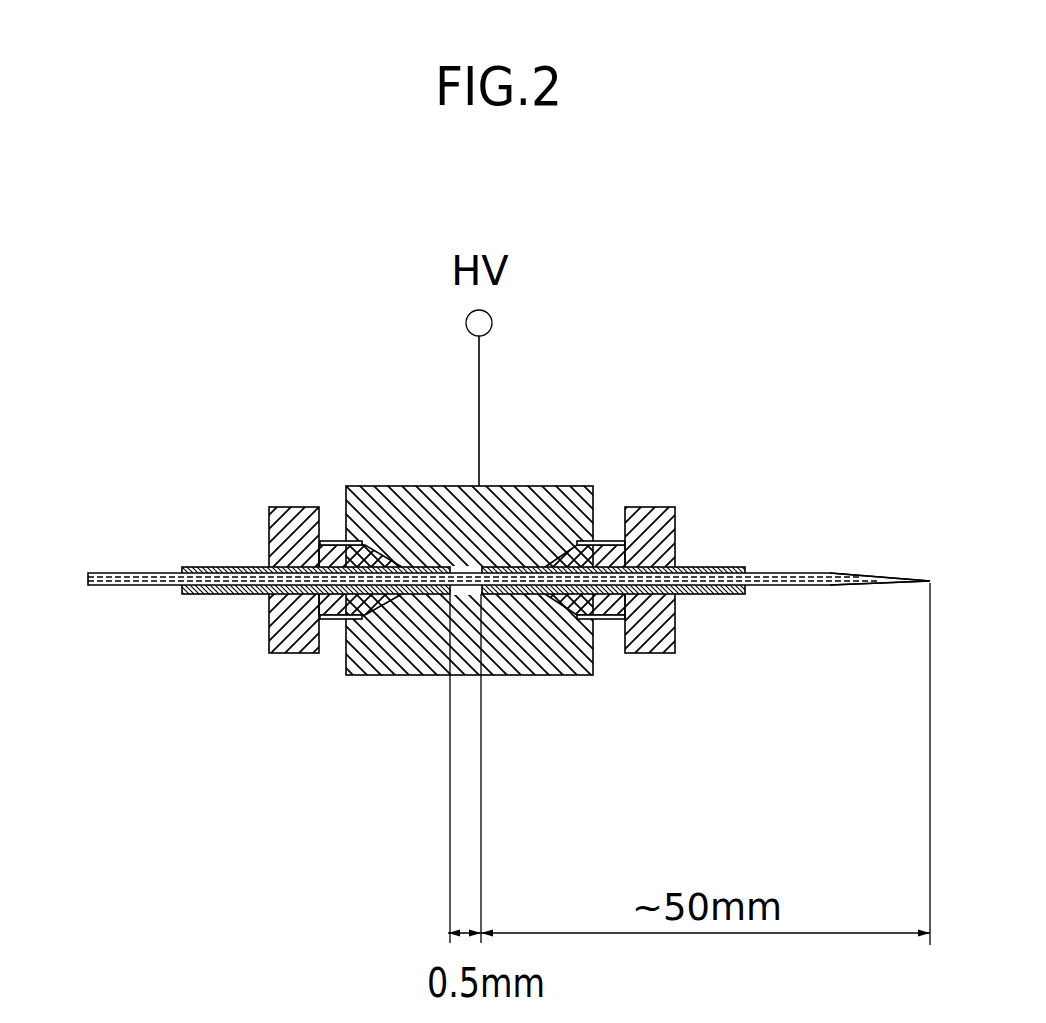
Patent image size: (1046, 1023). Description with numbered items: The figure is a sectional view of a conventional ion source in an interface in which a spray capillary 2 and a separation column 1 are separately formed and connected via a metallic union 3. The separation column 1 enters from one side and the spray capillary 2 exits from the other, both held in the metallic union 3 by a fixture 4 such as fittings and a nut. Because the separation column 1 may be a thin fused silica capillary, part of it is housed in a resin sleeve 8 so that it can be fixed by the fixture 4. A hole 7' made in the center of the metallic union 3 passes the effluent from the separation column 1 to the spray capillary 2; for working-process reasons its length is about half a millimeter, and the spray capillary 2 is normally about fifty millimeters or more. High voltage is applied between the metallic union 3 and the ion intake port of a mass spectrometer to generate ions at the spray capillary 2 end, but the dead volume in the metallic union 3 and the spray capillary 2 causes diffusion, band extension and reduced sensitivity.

The separation column 1 is at (143, 568).
The spray capillary 2 is at (785, 568).
The metallic union 3 is at (580, 486).
The fixture 4 is at (292, 507).
The hole 7' is at (427, 693).
The resin sleeve 8 is at (222, 597).